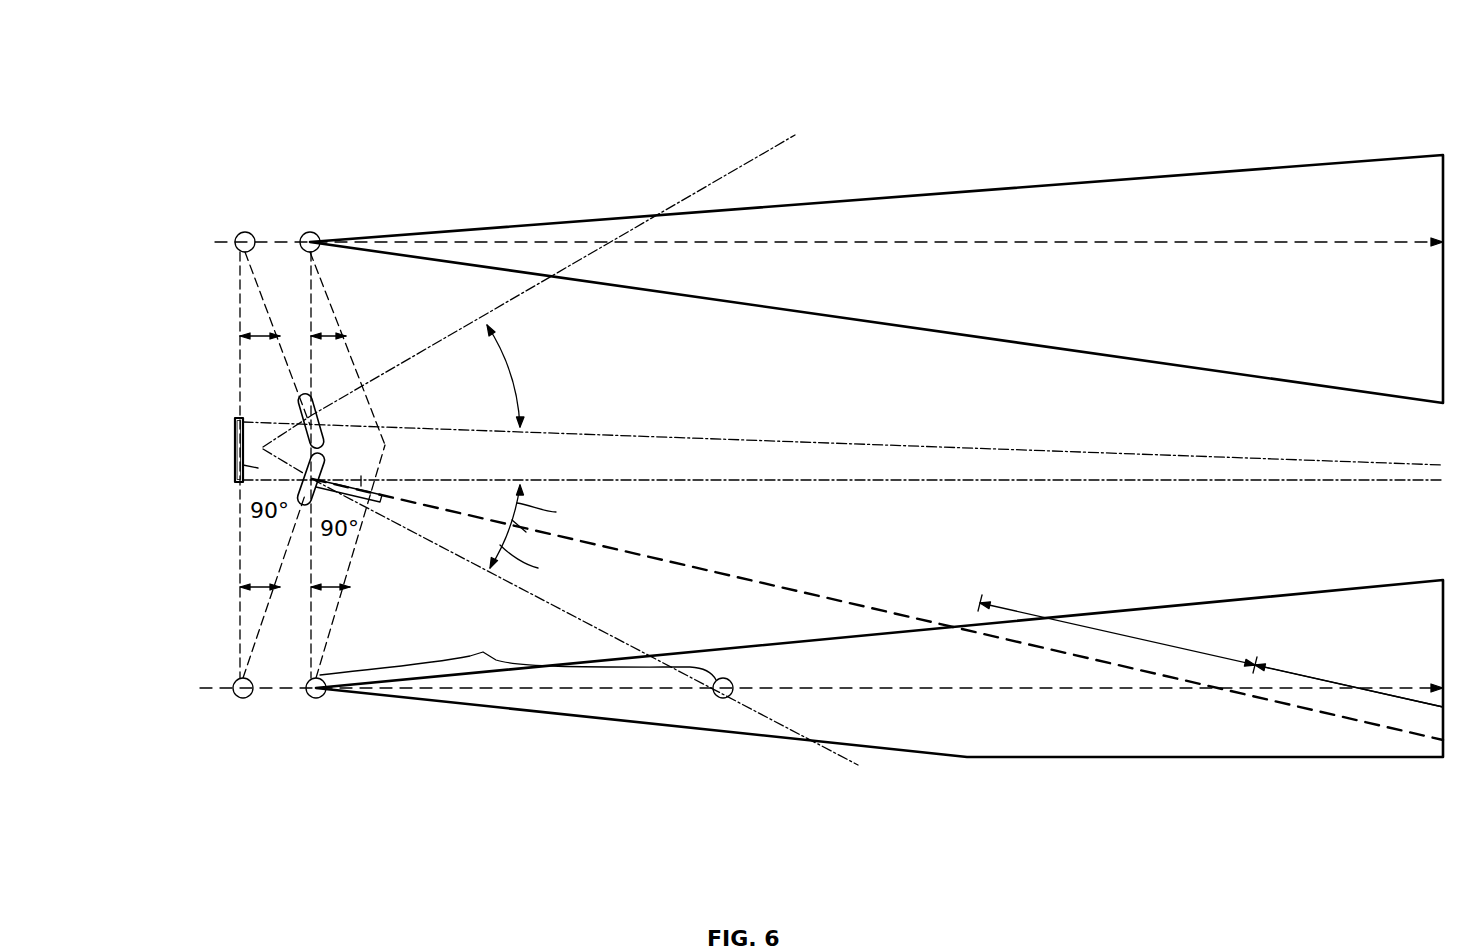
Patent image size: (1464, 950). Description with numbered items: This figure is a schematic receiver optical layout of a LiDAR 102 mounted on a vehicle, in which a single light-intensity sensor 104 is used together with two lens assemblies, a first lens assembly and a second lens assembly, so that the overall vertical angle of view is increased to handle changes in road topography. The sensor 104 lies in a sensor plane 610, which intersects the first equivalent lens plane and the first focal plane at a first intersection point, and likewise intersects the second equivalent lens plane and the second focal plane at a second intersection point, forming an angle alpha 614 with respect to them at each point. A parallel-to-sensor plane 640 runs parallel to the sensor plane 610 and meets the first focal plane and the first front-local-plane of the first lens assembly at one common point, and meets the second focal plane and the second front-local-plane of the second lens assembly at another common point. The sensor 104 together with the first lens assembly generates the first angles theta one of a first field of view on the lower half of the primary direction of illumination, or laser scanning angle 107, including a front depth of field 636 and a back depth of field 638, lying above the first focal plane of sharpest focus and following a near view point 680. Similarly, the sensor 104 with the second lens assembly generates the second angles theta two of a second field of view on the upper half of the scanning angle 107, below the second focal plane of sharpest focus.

The LiDAR system 102 is at (152, 80).
The light-intensity sensor 104 is at (236, 448).
The laser scanning angle 107 is at (1282, 737).
The sensor plane 610 is at (238, 383).
The angle alpha 614 is at (246, 338).
The front depth of field 636 is at (1140, 638).
The back depth of field 638 is at (1295, 672).
The parallel-to-sensor plane 640 is at (313, 290).
The near view point 680 is at (722, 698).